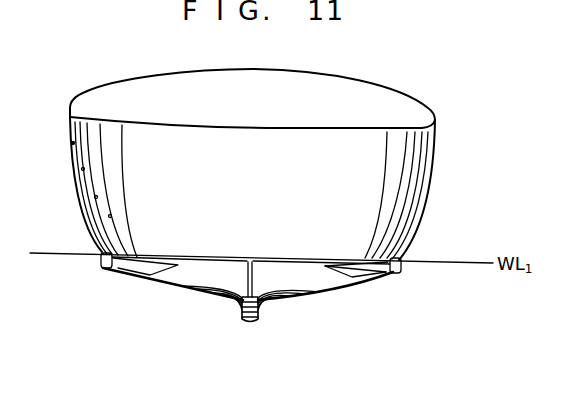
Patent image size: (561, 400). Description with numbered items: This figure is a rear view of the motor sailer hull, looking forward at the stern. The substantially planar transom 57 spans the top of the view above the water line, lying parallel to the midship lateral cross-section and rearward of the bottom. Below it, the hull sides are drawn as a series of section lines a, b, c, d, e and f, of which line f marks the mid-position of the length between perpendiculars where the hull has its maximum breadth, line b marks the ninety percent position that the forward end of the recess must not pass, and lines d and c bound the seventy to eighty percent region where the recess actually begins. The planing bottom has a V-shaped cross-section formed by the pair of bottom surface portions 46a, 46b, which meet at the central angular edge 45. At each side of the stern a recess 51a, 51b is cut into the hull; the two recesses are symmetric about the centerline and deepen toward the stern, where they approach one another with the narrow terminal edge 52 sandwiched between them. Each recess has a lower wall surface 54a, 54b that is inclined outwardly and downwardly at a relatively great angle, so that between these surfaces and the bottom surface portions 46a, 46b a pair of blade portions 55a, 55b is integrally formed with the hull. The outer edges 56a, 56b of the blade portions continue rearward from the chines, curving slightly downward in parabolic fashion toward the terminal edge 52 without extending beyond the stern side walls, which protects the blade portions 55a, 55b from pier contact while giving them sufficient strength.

The transom 57 is at (316, 132).
The narrow terminal edge 52 is at (254, 266).
The angular edge 45 is at (250, 324).
The bottom surface portion 46a is at (347, 274).
The bottom surface portion 46b is at (106, 269).
The recess 51a is at (355, 278).
The recess 51b is at (145, 268).
The lower wall surface 54a is at (288, 292).
The lower wall surface 54b is at (200, 289).
The blade portion 55a is at (324, 290).
The blade portion 55b is at (175, 291).
The outer edge 56a is at (396, 270).
The outer edge 56b is at (185, 294).
The hull section line a is at (100, 242).
The hull section line b is at (108, 217).
The hull section line c is at (95, 198).
The hull section line d is at (82, 170).
The hull section line e is at (72, 144).
The hull section line f is at (69, 131).